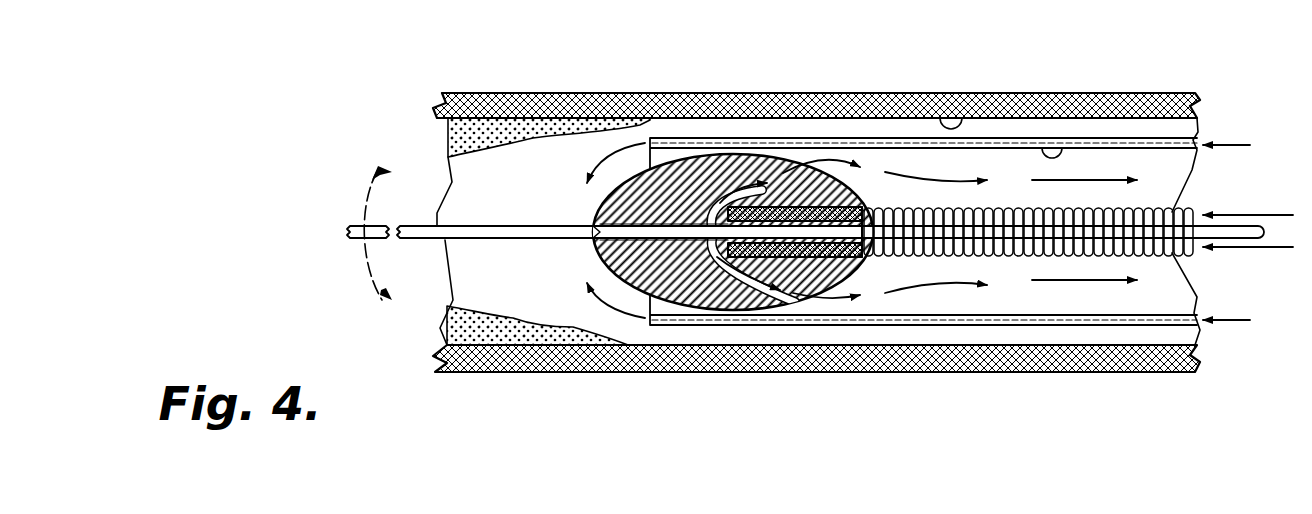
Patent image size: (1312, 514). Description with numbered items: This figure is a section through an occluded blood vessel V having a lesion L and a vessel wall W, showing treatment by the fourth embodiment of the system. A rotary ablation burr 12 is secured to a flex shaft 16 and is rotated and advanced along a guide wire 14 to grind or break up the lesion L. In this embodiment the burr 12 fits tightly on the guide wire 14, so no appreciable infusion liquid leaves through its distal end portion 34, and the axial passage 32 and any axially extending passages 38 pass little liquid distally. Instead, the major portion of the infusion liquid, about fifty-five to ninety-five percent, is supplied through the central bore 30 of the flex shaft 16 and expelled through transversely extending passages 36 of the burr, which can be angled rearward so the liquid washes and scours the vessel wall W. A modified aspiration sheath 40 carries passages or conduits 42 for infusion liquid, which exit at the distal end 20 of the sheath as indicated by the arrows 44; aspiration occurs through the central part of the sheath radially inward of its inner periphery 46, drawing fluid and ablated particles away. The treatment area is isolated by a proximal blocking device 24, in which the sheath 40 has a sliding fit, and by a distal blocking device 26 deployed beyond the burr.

The rotary ablation burr 12 is at (757, 188).
The guide wire 14 is at (415, 240).
The flex shaft 16 is at (1000, 212).
The distal end of the sheath 20 is at (640, 318).
The proximal blocking device 24 is at (716, 128).
The distal blocking device 26 is at (377, 170).
The central bore of the flex shaft 30 is at (860, 255).
The axial passage 32 is at (592, 216).
The distal end of the burr 34 is at (602, 225).
The transverse passages 36 is at (780, 178).
The axially extending passages 38 is at (692, 205).
The modified aspiration sheath 40 is at (1198, 130).
The passages or conduits 42 is at (1082, 142).
The arrows 44 is at (612, 240).
The inner periphery 46 is at (1042, 140).
The lesion L is at (514, 430).
The blood vessel V is at (910, 97).
The vessel wall W is at (957, 127).